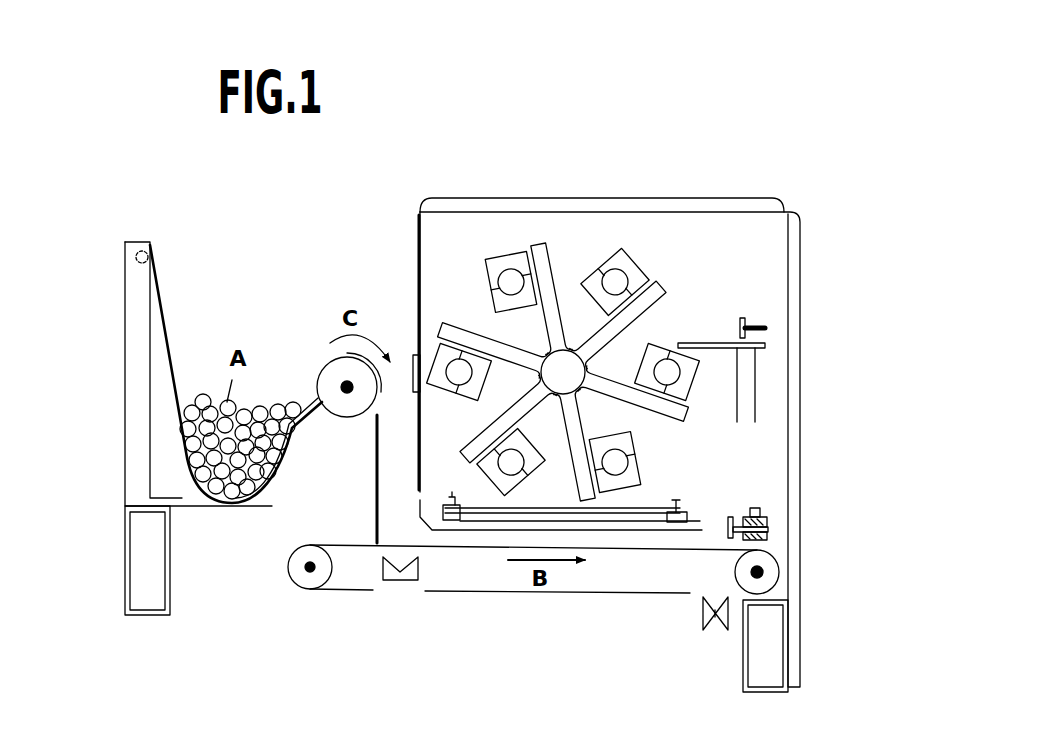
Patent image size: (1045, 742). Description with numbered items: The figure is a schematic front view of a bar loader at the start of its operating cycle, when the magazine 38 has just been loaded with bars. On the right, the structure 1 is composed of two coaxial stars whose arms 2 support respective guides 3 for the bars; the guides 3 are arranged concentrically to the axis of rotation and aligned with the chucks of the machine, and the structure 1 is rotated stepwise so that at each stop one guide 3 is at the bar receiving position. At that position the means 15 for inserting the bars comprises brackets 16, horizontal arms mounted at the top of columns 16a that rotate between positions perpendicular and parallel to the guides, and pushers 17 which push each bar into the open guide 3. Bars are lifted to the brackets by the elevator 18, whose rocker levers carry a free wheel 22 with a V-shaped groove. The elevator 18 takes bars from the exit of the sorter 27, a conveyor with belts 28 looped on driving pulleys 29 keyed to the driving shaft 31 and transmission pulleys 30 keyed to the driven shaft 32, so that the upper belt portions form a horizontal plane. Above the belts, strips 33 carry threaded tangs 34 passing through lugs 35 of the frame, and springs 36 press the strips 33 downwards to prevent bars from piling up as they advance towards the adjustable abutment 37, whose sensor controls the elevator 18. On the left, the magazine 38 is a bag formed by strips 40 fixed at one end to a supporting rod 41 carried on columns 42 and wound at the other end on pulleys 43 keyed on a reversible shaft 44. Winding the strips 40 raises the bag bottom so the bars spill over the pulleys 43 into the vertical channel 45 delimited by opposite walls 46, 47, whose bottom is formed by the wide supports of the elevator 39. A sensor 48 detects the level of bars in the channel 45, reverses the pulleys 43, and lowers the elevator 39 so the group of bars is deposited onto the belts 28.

The structure 1 is at (675, 243).
The arms 2 is at (545, 262).
The guides 3 is at (487, 285).
The means for inserting the bars 15 is at (768, 303).
The brackets 16 is at (699, 343).
The columns 16a is at (747, 377).
The pushers 17 is at (745, 317).
The elevator 18 is at (710, 634).
The free wheel 22 is at (720, 622).
The sorter 27 is at (462, 613).
The belts 28 is at (568, 595).
The driving pulleys 29 is at (767, 555).
The transmission pulleys 30 is at (290, 565).
The driving shaft 31 is at (763, 570).
The driven shaft 32 is at (307, 572).
The strips 33 is at (623, 530).
The threaded tangs 34 is at (670, 512).
The lugs 35 is at (677, 513).
The springs 36 is at (650, 533).
The abutment 37 is at (732, 513).
The magazine 38 is at (221, 327).
The elevator 39 is at (395, 585).
The strips 40 is at (167, 362).
The supporting rod 41 is at (142, 250).
The columns 42 is at (132, 327).
The pulleys 43 is at (320, 377).
The shaft 44 is at (343, 397).
The vertical channel 45 is at (385, 493).
The vertical wall 46 is at (376, 472).
The vertical wall 47 is at (421, 467).
The sensor 48 is at (411, 367).